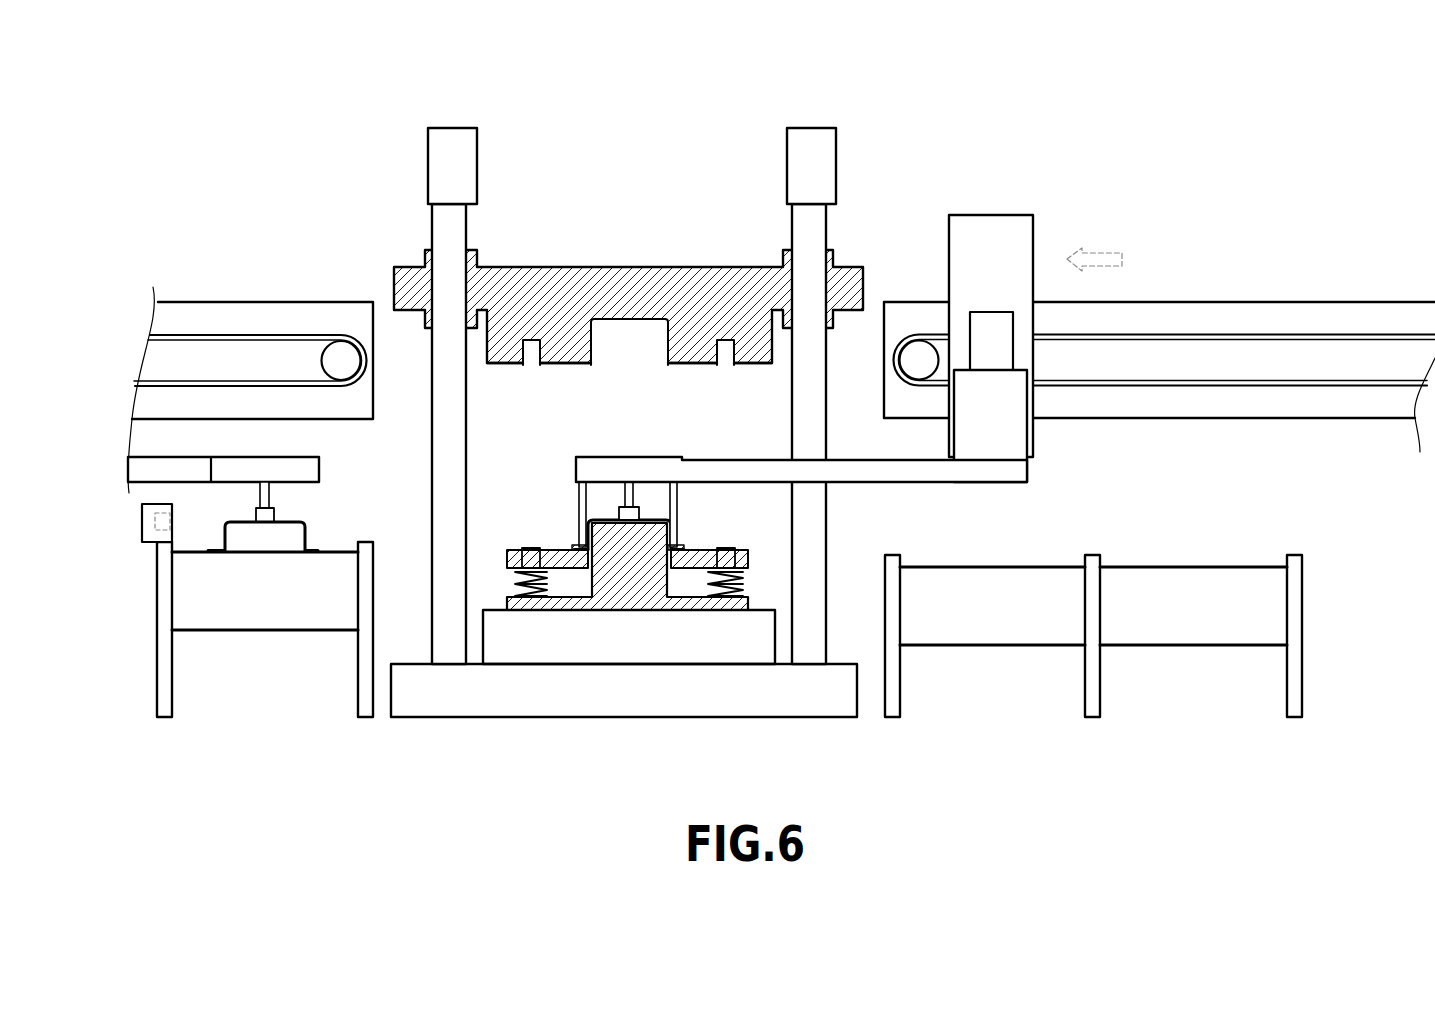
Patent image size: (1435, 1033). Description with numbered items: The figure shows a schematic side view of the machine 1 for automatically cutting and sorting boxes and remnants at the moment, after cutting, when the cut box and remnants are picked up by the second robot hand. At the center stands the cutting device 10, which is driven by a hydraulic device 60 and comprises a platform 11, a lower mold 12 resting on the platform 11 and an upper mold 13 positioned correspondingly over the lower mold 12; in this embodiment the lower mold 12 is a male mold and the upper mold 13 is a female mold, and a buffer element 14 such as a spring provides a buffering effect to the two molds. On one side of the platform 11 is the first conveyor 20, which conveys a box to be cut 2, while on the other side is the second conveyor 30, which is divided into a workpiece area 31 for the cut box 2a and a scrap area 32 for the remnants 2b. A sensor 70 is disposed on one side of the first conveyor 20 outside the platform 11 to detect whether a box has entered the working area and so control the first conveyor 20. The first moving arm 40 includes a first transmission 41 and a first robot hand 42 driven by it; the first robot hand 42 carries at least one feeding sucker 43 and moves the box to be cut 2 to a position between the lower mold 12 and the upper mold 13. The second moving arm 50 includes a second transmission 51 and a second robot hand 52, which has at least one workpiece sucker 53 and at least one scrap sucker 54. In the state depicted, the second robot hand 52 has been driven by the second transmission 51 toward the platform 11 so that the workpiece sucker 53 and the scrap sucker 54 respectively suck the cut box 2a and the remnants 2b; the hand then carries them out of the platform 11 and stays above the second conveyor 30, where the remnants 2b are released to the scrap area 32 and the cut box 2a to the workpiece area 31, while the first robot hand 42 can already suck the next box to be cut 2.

The machine 1 is at (523, 77).
The cutting device 10 is at (617, 240).
The platform 11 is at (712, 643).
The lower mold 12 is at (630, 563).
The upper mold 13 is at (532, 287).
The buffer element 14 is at (520, 582).
The hydraulic device 60 is at (812, 153).
The box to be cut 2 is at (307, 533).
The cut box 2a is at (655, 522).
The remnants 2b is at (682, 552).
The workpiece sucker 53 is at (620, 518).
The scrap sucker 54 is at (577, 546).
The first moving arm 40 is at (250, 328).
The first transmission 41 is at (274, 323).
The first robot hand 42 is at (178, 470).
The feeding sucker 43 is at (275, 512).
The first conveyor 20 is at (248, 615).
The sensor 70 is at (145, 523).
The second moving arm 50 is at (1005, 325).
The second transmission 51 is at (1306, 325).
The second robot hand 52 is at (1215, 400).
The second conveyor 30 is at (1158, 637).
The workpiece area 31 is at (1188, 630).
The scrap area 32 is at (973, 633).